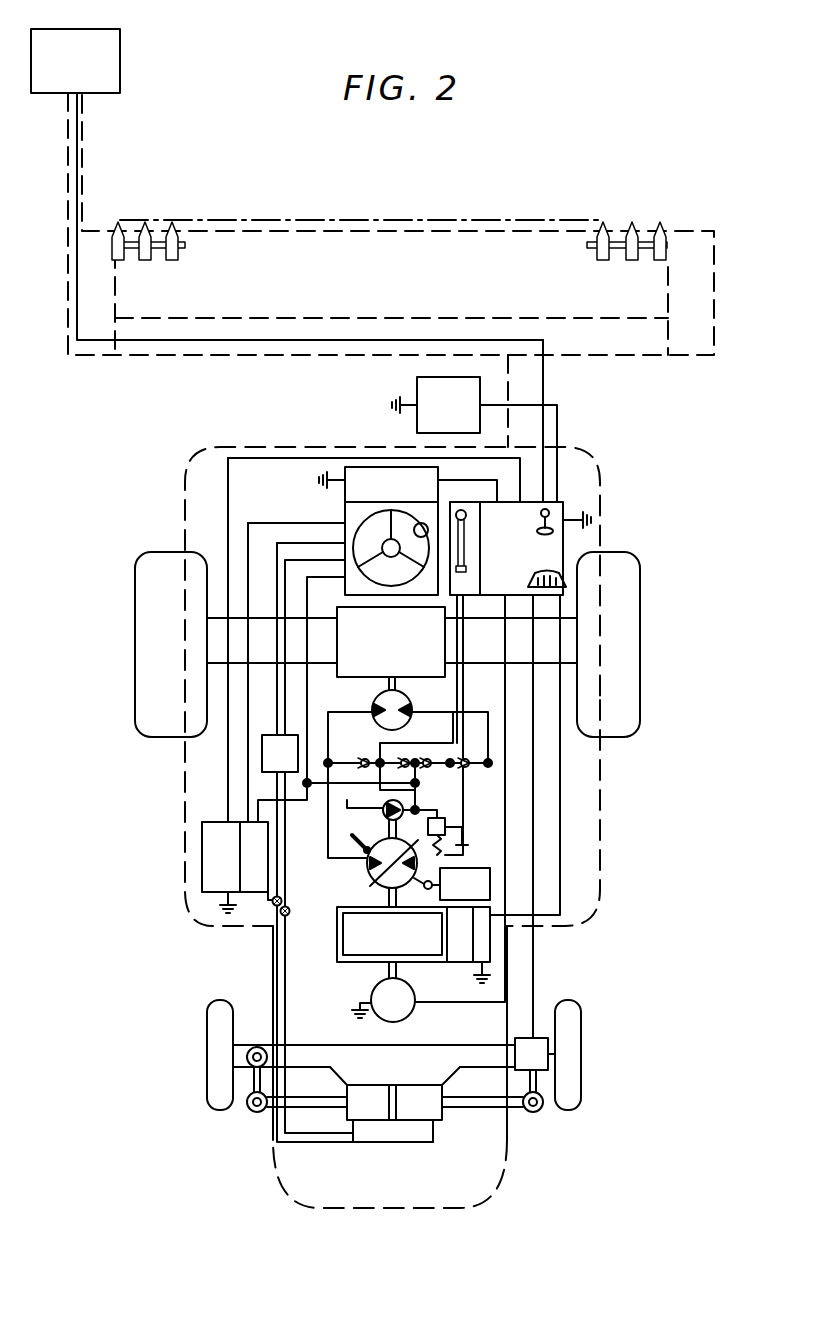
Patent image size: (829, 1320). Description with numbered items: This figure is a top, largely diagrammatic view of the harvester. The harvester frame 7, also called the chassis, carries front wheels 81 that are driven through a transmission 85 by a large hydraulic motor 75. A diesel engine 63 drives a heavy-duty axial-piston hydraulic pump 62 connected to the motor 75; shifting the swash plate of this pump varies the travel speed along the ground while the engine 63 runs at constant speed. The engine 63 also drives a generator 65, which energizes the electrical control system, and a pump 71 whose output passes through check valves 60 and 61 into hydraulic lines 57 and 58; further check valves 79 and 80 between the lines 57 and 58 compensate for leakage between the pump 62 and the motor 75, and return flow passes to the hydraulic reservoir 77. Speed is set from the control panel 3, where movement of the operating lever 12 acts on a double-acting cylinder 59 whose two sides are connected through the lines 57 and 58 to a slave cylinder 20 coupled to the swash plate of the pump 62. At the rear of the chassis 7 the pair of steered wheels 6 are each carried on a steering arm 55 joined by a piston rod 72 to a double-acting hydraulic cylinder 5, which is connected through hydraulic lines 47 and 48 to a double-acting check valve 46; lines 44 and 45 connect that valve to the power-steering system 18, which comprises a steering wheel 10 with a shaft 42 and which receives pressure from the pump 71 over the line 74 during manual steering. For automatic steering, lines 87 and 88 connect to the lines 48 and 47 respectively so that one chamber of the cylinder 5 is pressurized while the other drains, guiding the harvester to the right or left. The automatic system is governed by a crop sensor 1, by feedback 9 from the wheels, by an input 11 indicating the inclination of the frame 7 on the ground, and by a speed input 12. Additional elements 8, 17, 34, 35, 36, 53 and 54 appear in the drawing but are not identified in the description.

The crop sensor 1 is at (112, 48).
The control panel 3 is at (480, 514).
The double-acting hydraulic cylinder 5 is at (393, 1122).
The steered wheels 6 is at (215, 1032).
The vehicle frame 7 is at (185, 510).
The vehicle frame outline 8 is at (600, 808).
The feedback 9 is at (520, 1040).
The steering wheel 10 is at (372, 514).
The inclination input 11 is at (546, 574).
The operating lever 12 is at (458, 512).
The steering knob 17 is at (421, 523).
The power-steering system 18 is at (332, 550).
The slave cylinder 20 is at (485, 885).
The on-off switch 34 is at (549, 512).
The engine control unit 35 is at (478, 940).
The header control box 36 is at (433, 383).
The steering wheel shaft 42 is at (388, 545).
The hydraulic line 44 is at (284, 544).
The hydraulic line 45 is at (285, 573).
The double-acting check valve 46 is at (265, 755).
The hydraulic line 47 is at (286, 978).
The hydraulic line 48 is at (278, 985).
The cutter bar header 53 is at (488, 222).
The sensor cable 54 is at (68, 251).
The steering arm 55 is at (523, 1095).
The hydraulic line 57 is at (459, 706).
The hydraulic line 58 is at (457, 661).
The double-acting cylinder 59 is at (418, 784).
The check valve 60 is at (378, 762).
The check valve 61 is at (417, 763).
The axial-piston hydraulic pump 62 is at (378, 874).
The diesel engine 63 is at (360, 962).
The generator 65 is at (412, 1012).
The pump 71 is at (364, 844).
The piston rod 72 is at (468, 1110).
The hydraulic line 74 is at (257, 718).
The hydraulic motor 75 is at (407, 712).
The hydraulic reservoir 77 is at (384, 815).
The check valve 79 is at (364, 763).
The check valve 80 is at (466, 763).
The front wheels 81 is at (634, 622).
The transmission 85 is at (372, 620).
The hydraulic line 87 is at (283, 916).
The hydraulic line 88 is at (276, 906).